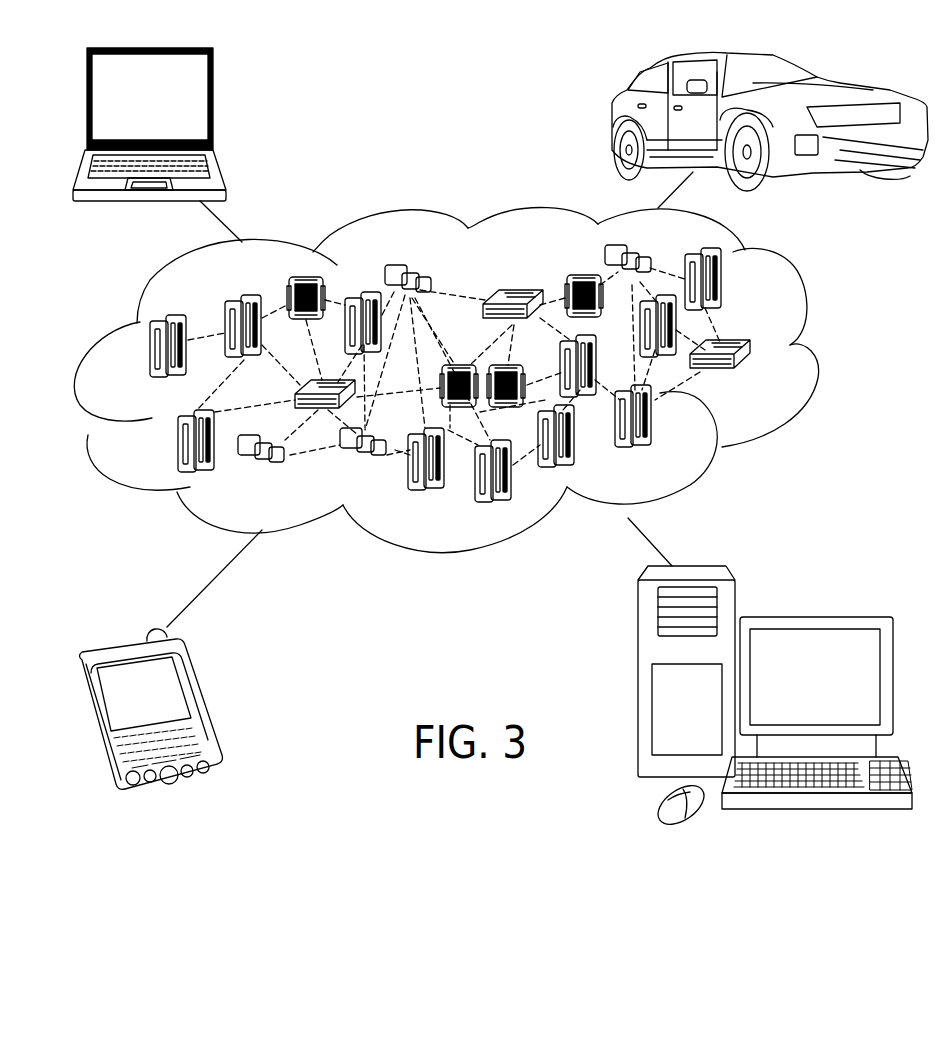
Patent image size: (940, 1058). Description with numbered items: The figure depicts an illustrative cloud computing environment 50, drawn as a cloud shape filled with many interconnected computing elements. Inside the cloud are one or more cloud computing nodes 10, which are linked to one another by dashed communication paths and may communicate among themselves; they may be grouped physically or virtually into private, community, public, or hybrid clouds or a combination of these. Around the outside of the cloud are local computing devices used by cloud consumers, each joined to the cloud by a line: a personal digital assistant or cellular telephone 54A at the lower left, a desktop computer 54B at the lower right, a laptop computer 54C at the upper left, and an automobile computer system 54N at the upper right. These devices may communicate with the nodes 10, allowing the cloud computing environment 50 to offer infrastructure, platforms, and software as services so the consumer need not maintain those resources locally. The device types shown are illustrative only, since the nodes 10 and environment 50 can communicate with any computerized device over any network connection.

The cloud computing node 10 is at (763, 383).
The cloud computing environment 50 is at (473, 380).
The personal digital assistant (PDA) or cellular telephone 54A is at (203, 704).
The desktop computer 54B is at (812, 618).
The laptop computer 54C is at (213, 103).
The automobile computer system 54N is at (613, 121).